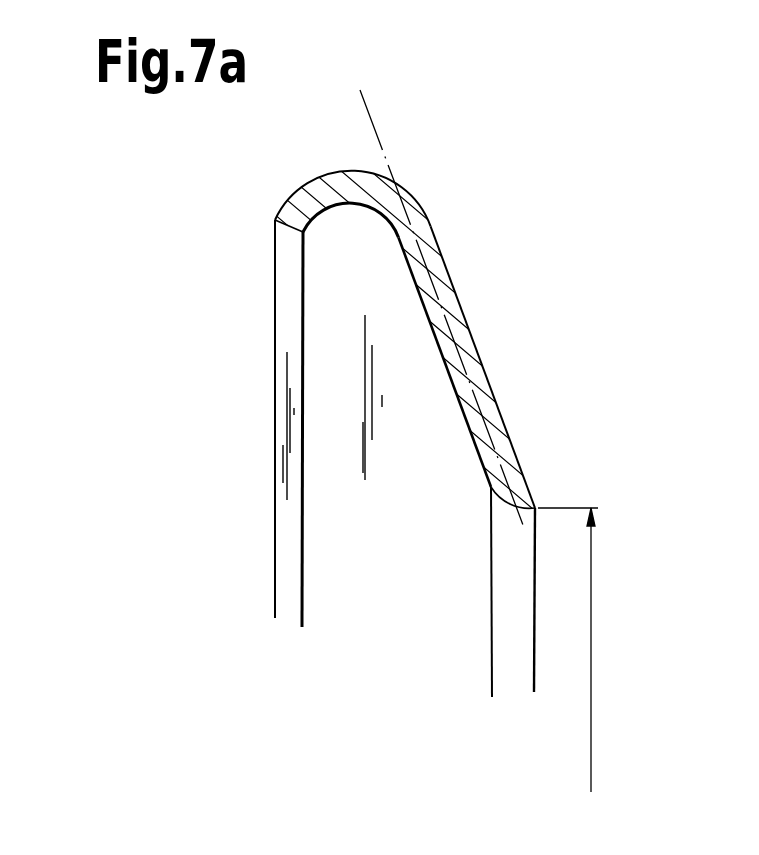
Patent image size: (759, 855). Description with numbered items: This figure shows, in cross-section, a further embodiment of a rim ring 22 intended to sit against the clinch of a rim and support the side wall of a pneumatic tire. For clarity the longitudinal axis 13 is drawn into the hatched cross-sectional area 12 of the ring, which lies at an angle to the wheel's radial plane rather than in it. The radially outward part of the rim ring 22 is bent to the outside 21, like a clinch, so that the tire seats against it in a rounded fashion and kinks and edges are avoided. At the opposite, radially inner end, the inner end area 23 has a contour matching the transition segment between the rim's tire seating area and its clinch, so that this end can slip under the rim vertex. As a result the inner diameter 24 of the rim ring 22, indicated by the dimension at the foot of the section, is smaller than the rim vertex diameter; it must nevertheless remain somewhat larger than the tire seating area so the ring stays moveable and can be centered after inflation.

The cross-sectional area 12 is at (433, 267).
The longitudinal axis 13 is at (372, 122).
The area bent to the outside 21 is at (313, 193).
The rim ring 22 is at (332, 335).
The inner end area 23 is at (532, 508).
The inner diameter 24 is at (591, 665).